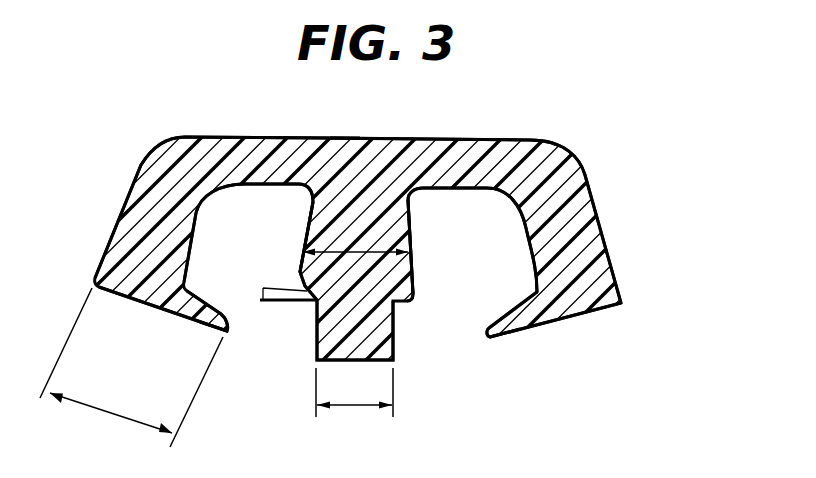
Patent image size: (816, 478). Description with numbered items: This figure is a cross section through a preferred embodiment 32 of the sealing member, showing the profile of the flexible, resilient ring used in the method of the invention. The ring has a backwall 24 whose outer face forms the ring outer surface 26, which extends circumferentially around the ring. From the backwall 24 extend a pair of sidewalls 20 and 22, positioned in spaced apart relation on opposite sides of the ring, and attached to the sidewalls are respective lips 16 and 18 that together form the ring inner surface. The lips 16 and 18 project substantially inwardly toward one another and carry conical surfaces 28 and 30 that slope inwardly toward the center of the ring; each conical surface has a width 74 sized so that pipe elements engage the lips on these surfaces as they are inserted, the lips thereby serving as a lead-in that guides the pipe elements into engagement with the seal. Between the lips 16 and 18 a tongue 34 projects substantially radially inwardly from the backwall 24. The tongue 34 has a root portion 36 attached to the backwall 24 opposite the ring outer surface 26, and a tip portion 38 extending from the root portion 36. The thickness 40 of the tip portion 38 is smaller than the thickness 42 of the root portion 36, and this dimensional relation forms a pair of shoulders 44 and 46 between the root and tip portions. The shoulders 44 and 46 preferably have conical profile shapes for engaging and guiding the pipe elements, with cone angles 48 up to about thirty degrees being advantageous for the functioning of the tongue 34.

The lip 16 is at (195, 317).
The lip 18 is at (500, 338).
The sidewall 20 is at (133, 218).
The sidewall 22 is at (587, 220).
The backwall 24 is at (268, 147).
The ring outer surface 26 is at (367, 137).
The conical surface 28 is at (163, 310).
The conical surface 30 is at (577, 315).
The sealing member embodiment 32 is at (630, 150).
The tongue 34 is at (397, 226).
The root portion 36 is at (318, 217).
The tip portion 38 is at (370, 343).
The thickness of tip portion 40 is at (352, 407).
The thickness of root portion 42 is at (380, 241).
The shoulder 44 is at (293, 280).
The shoulder 46 is at (423, 287).
The cone angle 48 is at (263, 291).
The width of conical surface 74 is at (102, 413).